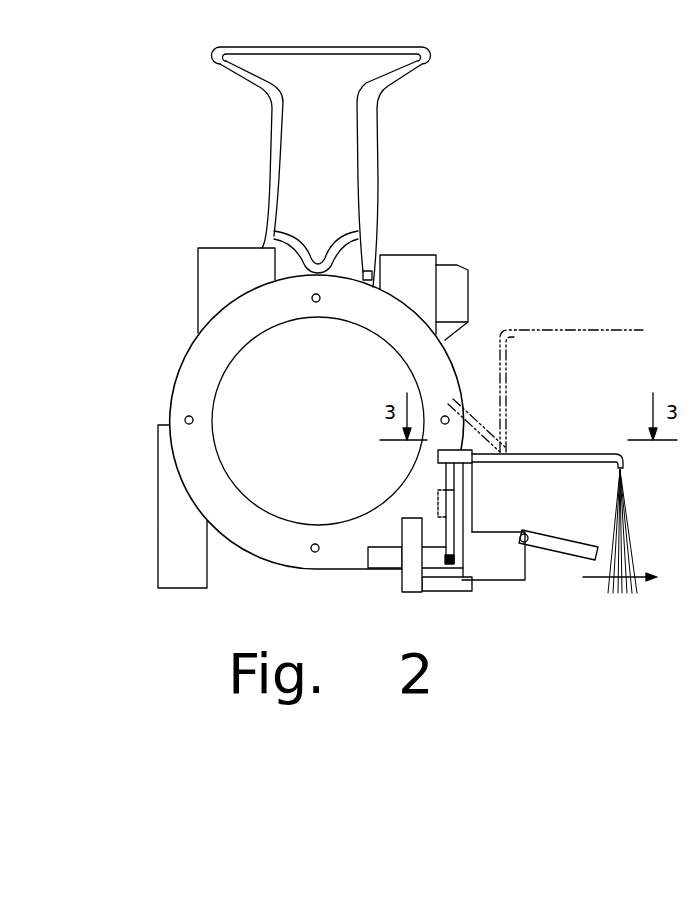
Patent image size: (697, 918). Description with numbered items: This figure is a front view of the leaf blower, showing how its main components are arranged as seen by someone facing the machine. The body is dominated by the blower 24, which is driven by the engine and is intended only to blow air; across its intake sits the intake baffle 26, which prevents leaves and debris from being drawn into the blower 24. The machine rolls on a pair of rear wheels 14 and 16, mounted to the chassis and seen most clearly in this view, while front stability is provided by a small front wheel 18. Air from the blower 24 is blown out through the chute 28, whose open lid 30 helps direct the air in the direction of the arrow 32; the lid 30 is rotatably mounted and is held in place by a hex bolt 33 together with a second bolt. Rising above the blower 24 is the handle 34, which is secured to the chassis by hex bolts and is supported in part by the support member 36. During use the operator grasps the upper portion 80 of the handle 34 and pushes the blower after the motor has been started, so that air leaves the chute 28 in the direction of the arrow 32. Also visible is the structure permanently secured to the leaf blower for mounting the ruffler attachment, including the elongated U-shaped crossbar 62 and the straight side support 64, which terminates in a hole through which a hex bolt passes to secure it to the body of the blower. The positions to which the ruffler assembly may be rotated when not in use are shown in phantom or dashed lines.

The rear wheel 14 is at (158, 522).
The rear wheel 16 is at (477, 503).
The front wheel 18 is at (402, 581).
The blower 24 is at (193, 360).
The intake baffle 26 is at (334, 419).
The chute 28 is at (505, 573).
The lid 30 is at (555, 543).
The arrow 32 is at (593, 579).
The hex bolt 33 is at (533, 549).
The handle 34 is at (377, 165).
The support member 36 is at (300, 237).
The crossbar 62 is at (438, 454).
The straight side support 64 is at (437, 503).
The upper portion of handle 80 is at (292, 55).